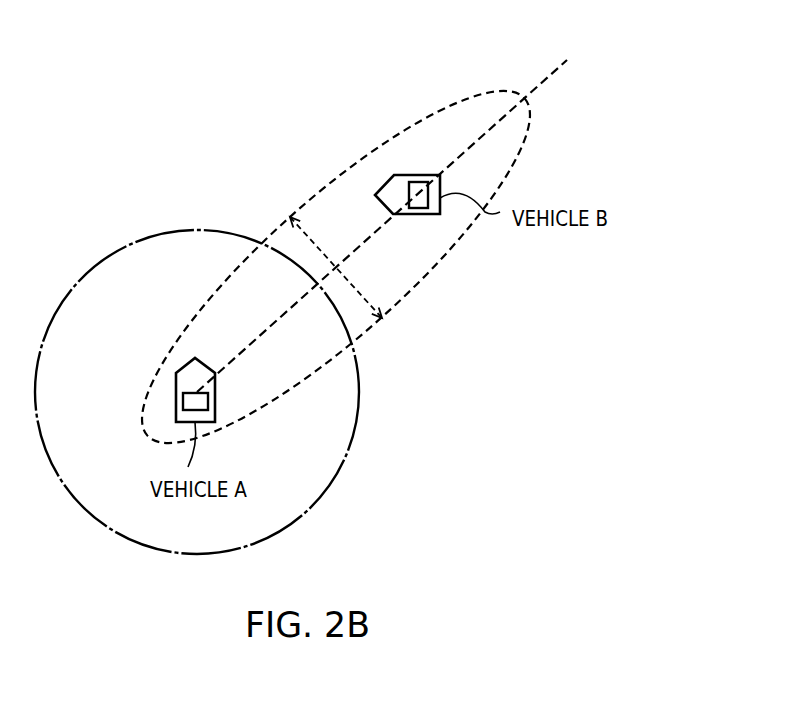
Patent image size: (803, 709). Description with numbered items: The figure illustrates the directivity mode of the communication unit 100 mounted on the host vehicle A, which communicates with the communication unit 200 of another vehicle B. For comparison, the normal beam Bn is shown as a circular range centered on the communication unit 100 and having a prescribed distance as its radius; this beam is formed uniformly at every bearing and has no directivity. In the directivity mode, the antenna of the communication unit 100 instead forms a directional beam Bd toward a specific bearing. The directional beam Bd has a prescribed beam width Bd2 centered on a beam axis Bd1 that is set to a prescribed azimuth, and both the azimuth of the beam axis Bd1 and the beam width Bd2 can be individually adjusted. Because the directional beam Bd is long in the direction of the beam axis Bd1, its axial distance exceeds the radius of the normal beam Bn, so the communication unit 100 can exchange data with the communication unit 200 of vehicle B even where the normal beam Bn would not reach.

The normal beam Bn is at (315, 502).
The directional beam Bd is at (526, 140).
The beam axis Bd1 is at (382, 221).
The beam width Bd2 is at (343, 267).
The communication unit 100 is at (208, 402).
The communication unit 200 is at (421, 182).